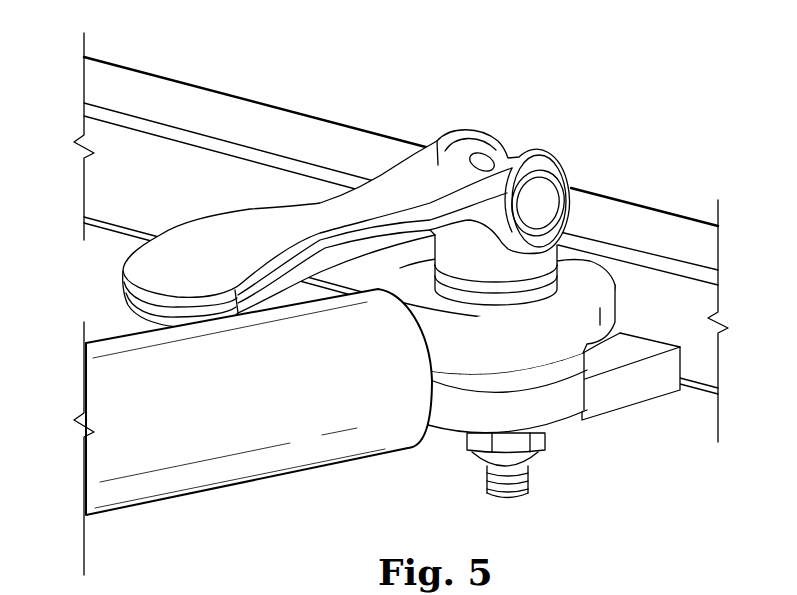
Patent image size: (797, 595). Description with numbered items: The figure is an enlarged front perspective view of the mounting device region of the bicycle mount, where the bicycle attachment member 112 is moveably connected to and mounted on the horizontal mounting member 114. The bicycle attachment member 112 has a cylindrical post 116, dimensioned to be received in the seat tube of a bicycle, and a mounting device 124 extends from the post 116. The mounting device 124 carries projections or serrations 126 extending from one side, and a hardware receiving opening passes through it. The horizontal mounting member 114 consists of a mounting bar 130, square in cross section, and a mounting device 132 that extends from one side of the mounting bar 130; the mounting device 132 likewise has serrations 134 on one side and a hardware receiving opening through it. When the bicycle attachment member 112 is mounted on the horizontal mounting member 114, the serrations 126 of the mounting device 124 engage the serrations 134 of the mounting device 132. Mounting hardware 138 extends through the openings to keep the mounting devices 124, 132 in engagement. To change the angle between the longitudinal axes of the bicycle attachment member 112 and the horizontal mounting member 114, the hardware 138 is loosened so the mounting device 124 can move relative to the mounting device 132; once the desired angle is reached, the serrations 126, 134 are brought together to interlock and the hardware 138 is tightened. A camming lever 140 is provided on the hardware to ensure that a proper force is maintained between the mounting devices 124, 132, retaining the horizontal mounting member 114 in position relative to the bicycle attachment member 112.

The bicycle attachment member 112 is at (310, 480).
The horizontal mounting member 114 is at (273, 80).
The cylindrical post 116 is at (202, 480).
The mounting device 124 is at (616, 291).
The serrations 126 is at (498, 330).
The mounting bar 130 is at (178, 100).
The mounting device 132 is at (633, 392).
The serrations 134 is at (520, 355).
The mounting hardware 138 is at (550, 442).
The camming lever 140 is at (167, 258).